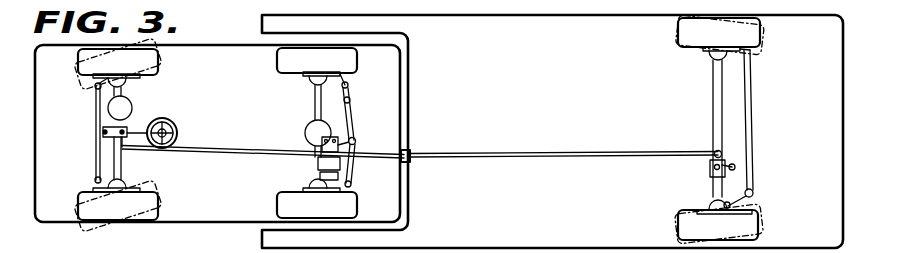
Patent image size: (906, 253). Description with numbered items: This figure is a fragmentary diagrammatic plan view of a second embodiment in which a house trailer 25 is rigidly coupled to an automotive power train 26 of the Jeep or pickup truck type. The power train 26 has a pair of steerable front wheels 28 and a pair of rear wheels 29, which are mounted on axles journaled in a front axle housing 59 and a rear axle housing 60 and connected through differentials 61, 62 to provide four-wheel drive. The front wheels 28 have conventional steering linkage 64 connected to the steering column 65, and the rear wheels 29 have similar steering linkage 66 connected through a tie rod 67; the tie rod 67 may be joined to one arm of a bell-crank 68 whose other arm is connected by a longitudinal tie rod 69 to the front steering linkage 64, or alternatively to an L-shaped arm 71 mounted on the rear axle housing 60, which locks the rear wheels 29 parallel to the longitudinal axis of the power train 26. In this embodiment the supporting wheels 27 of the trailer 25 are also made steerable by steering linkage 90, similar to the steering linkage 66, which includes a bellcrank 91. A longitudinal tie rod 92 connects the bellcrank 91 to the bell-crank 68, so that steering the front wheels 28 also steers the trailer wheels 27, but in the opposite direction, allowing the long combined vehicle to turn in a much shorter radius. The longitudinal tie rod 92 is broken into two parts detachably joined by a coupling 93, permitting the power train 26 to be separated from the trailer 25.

The house trailer 25 is at (267, 43).
The power train 26 is at (190, 43).
The supporting wheels 27 is at (760, 32).
The front wheels 28 is at (158, 62).
The rear wheels 29 is at (357, 63).
The front axle housing 59 is at (122, 168).
The rear axle housing 60 is at (315, 98).
The differential 61 is at (125, 106).
The differential 62 is at (305, 134).
The steering linkage 64 is at (91, 155).
The steering column 65 is at (134, 122).
The steering linkage 66 is at (353, 86).
The tie rod 67 is at (352, 120).
The bell-crank 68 is at (345, 136).
The longitudinal tie rod 69 is at (221, 133).
The L-shaped arm 71 is at (342, 170).
The steering linkage 90 is at (758, 134).
The bellcrank 91 is at (712, 172).
The longitudinal tie rod 92 is at (593, 157).
The coupling 93 is at (410, 162).